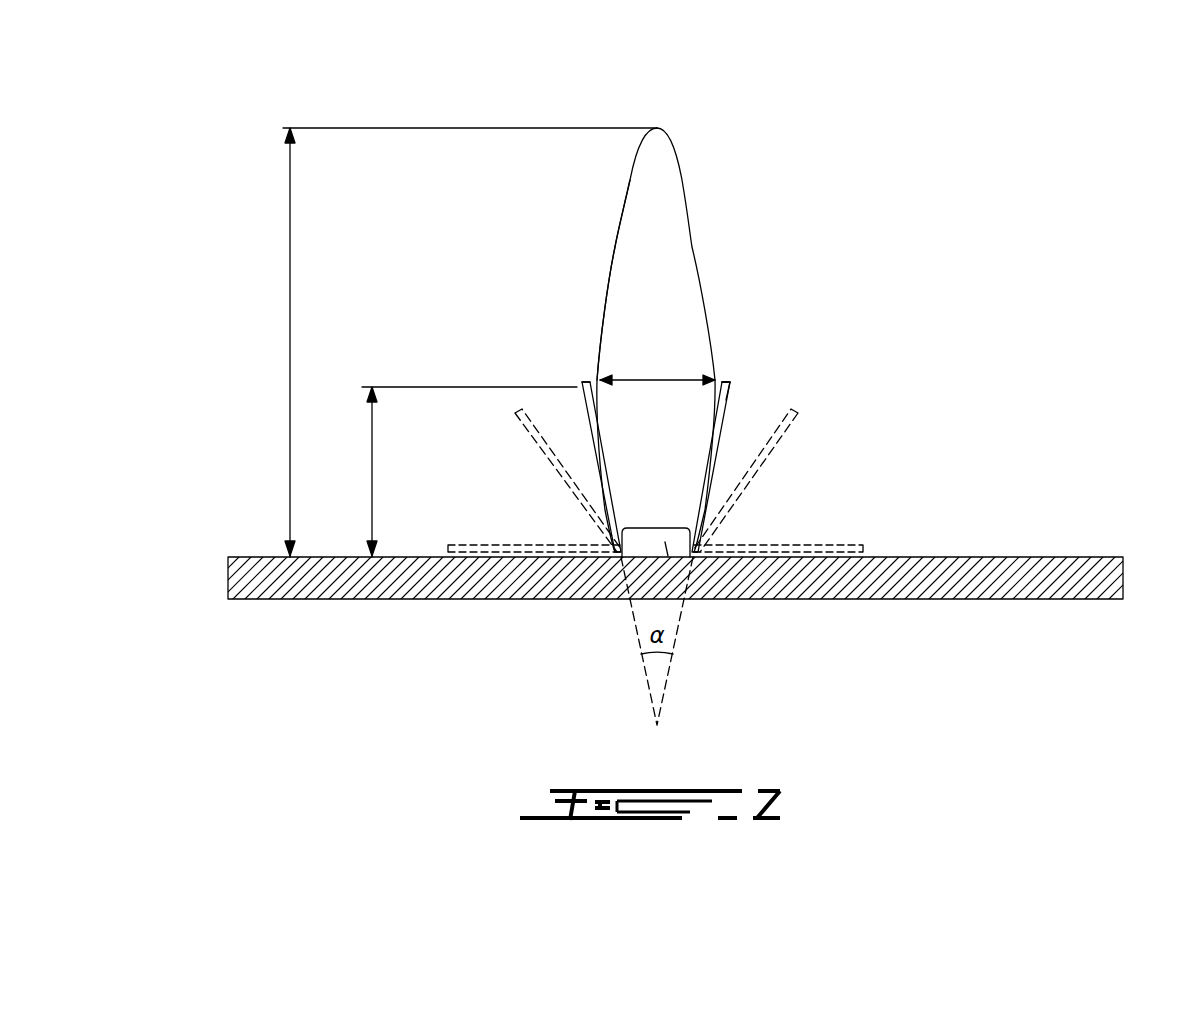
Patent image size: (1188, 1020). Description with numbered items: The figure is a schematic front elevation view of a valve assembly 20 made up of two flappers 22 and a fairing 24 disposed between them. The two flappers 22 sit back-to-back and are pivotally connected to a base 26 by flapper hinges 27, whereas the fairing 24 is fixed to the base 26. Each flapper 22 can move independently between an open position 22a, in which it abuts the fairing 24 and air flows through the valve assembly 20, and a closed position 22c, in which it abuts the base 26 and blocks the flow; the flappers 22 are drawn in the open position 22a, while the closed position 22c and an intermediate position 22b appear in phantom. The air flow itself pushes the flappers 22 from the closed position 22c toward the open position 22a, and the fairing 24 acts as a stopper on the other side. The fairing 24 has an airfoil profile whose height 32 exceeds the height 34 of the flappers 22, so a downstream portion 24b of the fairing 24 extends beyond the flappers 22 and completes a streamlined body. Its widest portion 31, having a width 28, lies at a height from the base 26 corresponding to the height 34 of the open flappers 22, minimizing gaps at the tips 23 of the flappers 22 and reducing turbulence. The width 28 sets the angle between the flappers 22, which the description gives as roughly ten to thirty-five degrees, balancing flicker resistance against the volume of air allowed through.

The valve assembly 20 is at (1000, 292).
The flappers 22 is at (588, 415).
The open position 22a is at (725, 380).
The intermediate position 22b is at (800, 413).
The closed position 22c is at (863, 548).
The tips 23 is at (583, 381).
The fairing 24 is at (688, 195).
The downstream portion 24b is at (613, 248).
The base 26 is at (850, 600).
The flapper hinges 27 is at (668, 547).
The width 28 is at (655, 380).
The widest portion 31 is at (723, 380).
The height 32 is at (289, 340).
The height 34 is at (371, 468).